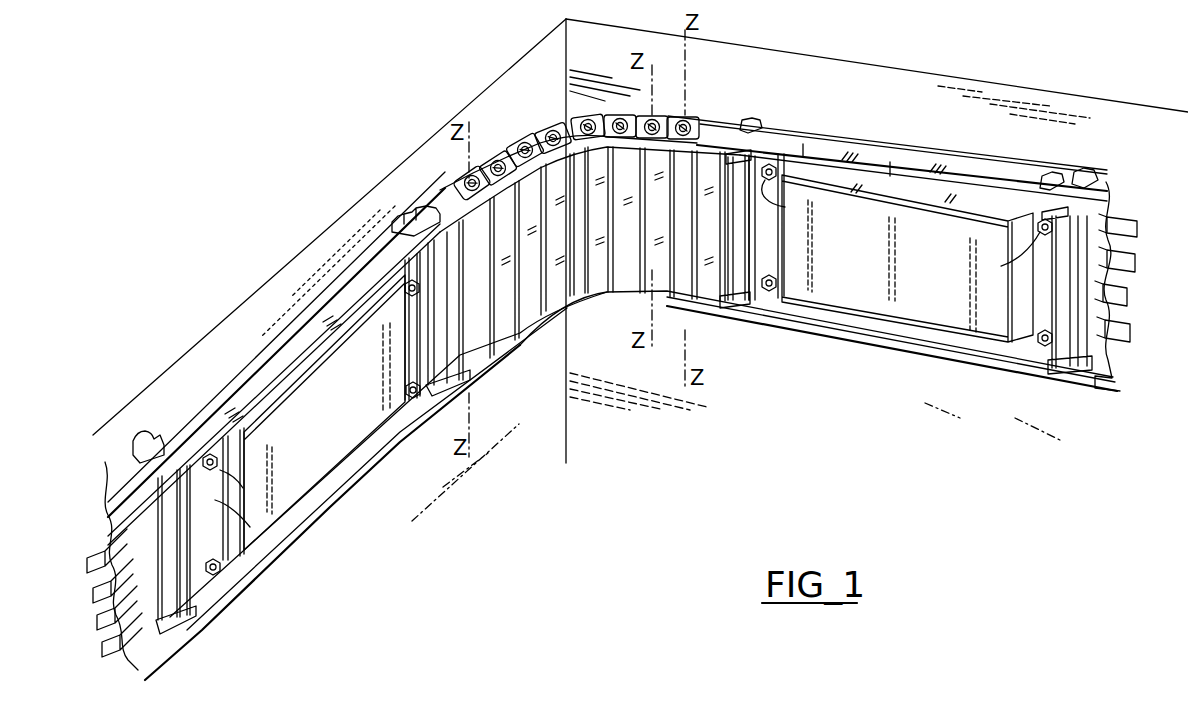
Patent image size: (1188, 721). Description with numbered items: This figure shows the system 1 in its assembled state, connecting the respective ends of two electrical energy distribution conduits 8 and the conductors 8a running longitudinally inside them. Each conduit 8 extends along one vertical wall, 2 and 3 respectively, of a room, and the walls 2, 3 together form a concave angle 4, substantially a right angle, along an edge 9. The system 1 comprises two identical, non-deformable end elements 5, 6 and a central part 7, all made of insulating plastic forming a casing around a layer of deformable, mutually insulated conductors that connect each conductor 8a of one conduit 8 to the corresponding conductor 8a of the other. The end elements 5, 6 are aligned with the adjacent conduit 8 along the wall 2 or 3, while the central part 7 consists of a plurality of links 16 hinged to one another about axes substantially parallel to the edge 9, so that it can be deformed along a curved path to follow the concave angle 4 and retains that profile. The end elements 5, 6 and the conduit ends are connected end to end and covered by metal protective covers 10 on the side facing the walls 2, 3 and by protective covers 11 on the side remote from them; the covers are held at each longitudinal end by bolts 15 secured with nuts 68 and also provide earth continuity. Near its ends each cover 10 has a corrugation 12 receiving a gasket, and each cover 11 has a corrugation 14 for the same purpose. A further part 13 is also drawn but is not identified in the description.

The system 1 is at (530, 366).
The wall 2 is at (474, 118).
The wall 3 is at (897, 88).
The concave angle 4 is at (584, 69).
The end element 5 is at (435, 222).
The end element 6 is at (795, 150).
The central part 7 is at (599, 310).
The electrical energy distribution conduit 8 is at (230, 400).
The conductor 8a is at (90, 560).
The edge 9 is at (565, 95).
The protective cover 10 is at (295, 320).
The protective cover 11 is at (335, 450).
The corrugation 12 is at (398, 218).
The frame 13 is at (405, 400).
The corrugation 14 is at (433, 357).
The bolt 15 is at (220, 462).
The link 16 is at (513, 150).
The nut 68 is at (228, 473).